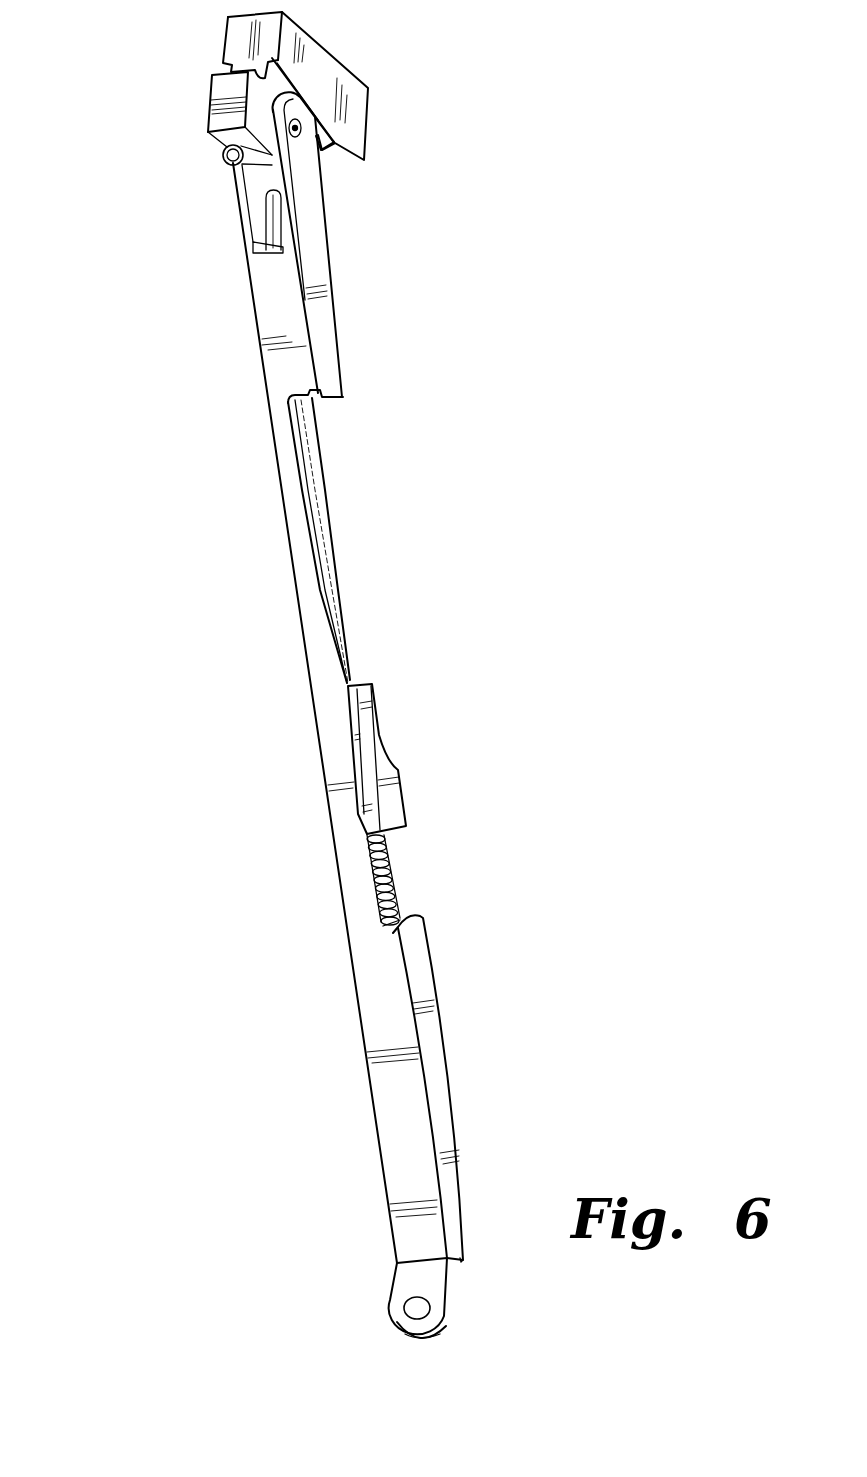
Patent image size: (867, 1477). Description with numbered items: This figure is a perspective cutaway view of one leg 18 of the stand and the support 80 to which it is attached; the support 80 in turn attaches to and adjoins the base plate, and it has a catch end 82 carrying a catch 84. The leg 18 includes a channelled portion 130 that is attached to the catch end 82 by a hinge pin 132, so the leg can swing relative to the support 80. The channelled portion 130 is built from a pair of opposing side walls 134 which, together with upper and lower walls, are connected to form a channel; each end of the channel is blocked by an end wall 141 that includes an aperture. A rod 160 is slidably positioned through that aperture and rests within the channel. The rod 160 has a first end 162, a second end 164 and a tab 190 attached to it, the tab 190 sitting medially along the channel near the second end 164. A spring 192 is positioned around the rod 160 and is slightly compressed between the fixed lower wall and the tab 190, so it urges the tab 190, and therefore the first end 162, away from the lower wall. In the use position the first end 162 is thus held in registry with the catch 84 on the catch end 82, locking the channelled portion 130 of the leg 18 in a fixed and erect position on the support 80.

The leg 18 is at (140, 690).
The support 80 is at (185, 41).
The catch end 82 is at (334, 60).
The catch 84 is at (223, 151).
The channelled portion 130 is at (287, 500).
The hinge pin 132 is at (323, 150).
The side walls 134 is at (268, 378).
The end wall 141 is at (260, 240).
The rod 160 is at (328, 580).
The first end 162 is at (277, 217).
The second end 164 is at (393, 1097).
The tab 190 is at (393, 807).
The spring 192 is at (395, 887).